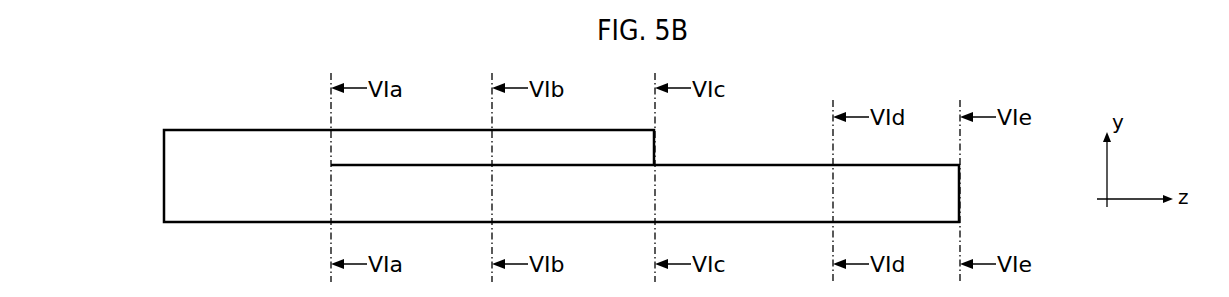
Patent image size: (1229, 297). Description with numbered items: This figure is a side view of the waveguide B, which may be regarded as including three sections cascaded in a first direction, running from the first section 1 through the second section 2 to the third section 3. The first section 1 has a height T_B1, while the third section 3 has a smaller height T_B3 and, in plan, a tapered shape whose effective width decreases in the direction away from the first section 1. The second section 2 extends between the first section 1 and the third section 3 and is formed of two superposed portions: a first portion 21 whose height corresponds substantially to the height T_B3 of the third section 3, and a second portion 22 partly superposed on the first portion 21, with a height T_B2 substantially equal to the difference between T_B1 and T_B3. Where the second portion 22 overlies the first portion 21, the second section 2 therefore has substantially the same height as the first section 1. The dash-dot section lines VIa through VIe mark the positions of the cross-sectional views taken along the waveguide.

The waveguide B is at (230, 97).
The first section 1 is at (284, 114).
The second section 2 is at (473, 65).
The third section 3 is at (767, 140).
The first portion 21 is at (607, 203).
The second portion 22 is at (604, 143).